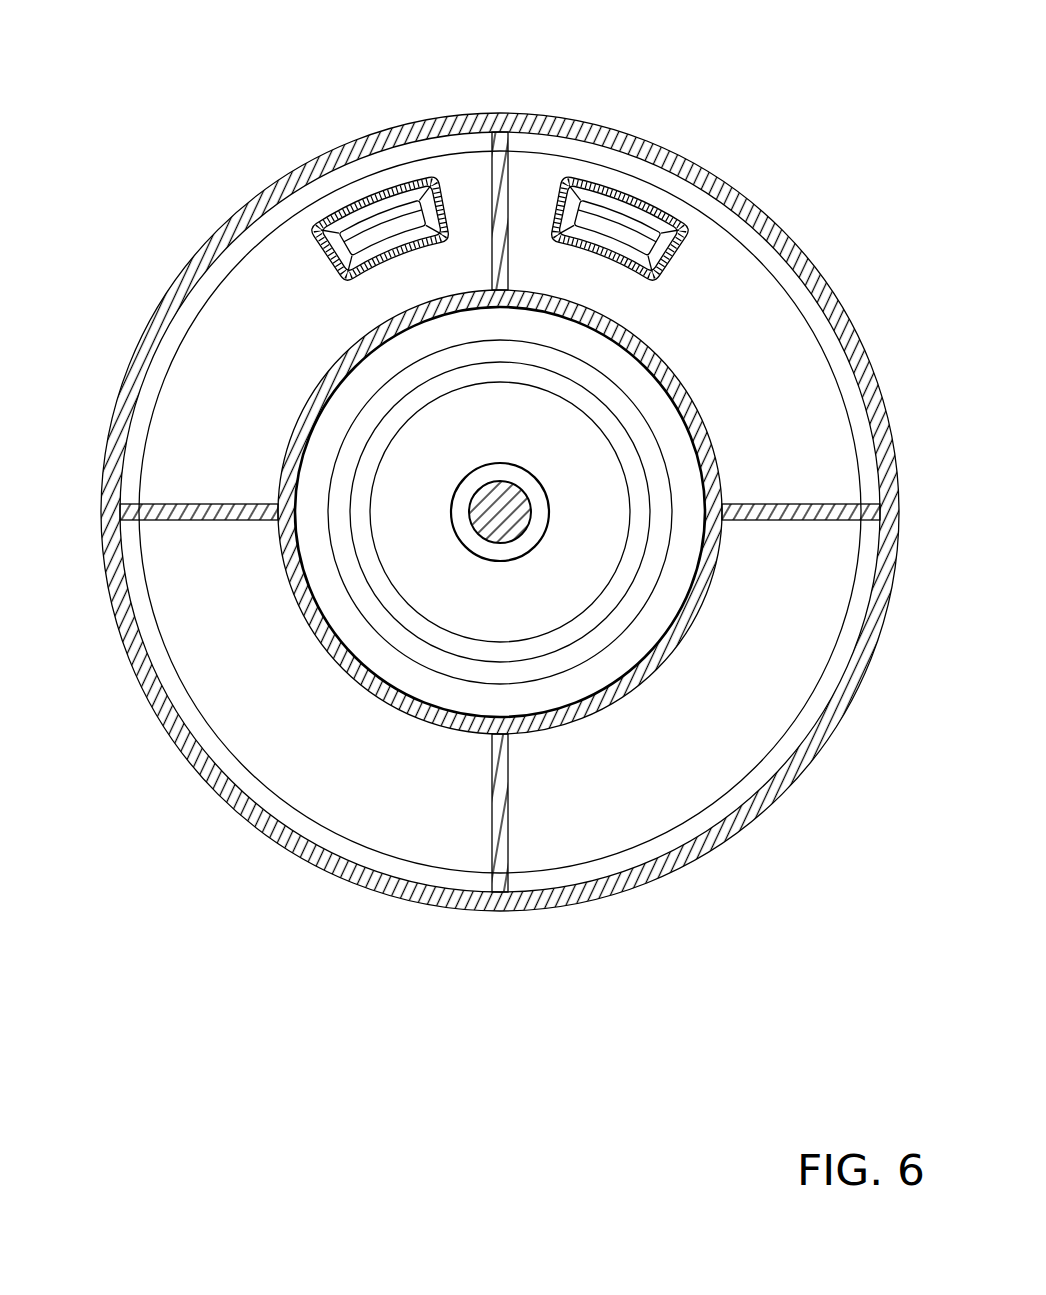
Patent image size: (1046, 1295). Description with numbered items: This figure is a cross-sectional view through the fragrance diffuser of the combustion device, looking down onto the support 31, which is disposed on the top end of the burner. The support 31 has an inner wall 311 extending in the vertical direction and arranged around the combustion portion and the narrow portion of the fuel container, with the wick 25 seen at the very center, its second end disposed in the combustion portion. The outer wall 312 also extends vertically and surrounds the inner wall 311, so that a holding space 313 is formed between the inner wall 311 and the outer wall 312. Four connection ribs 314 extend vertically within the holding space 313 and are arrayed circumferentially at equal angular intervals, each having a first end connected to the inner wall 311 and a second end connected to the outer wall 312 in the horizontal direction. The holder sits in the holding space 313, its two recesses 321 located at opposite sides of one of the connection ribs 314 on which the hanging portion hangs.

The support 31 is at (500, 488).
The inner wall 311 is at (640, 343).
The outer wall 312 is at (808, 267).
The holding space 313 is at (735, 297).
The connection rib 314 is at (503, 170).
The recess 321 is at (363, 193).
The wick 25 is at (508, 517).